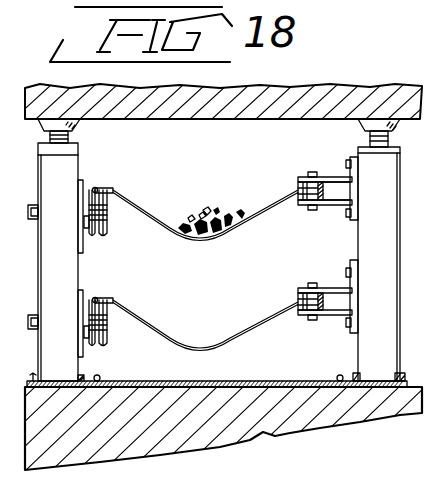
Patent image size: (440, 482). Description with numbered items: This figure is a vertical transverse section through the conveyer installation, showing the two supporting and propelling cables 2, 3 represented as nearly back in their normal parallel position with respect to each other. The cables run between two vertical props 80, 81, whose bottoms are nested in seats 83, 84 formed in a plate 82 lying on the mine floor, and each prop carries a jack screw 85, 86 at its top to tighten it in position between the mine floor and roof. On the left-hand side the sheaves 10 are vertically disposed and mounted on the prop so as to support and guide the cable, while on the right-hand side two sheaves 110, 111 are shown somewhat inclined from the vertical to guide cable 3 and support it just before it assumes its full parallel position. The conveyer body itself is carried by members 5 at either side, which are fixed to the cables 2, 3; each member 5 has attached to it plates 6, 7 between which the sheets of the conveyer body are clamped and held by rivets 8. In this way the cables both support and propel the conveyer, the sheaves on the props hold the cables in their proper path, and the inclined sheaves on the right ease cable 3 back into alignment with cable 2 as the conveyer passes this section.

The supporting and propelling cable 2 is at (100, 190).
The supporting and propelling cable 3 is at (322, 190).
The member 5 is at (96, 188).
The plate 6 is at (114, 190).
The plate 7 is at (110, 194).
The rivet 8 is at (435, 274).
The sheave 10 is at (96, 345).
The prop 80 is at (84, 268).
The prop 81 is at (400, 256).
The plate 82 is at (246, 381).
The seat 83 is at (54, 378).
The seat 84 is at (392, 380).
The jack screw 85 is at (72, 138).
The jack screw 86 is at (370, 138).
The sheave 110 is at (298, 189).
The sheave 111 is at (310, 316).